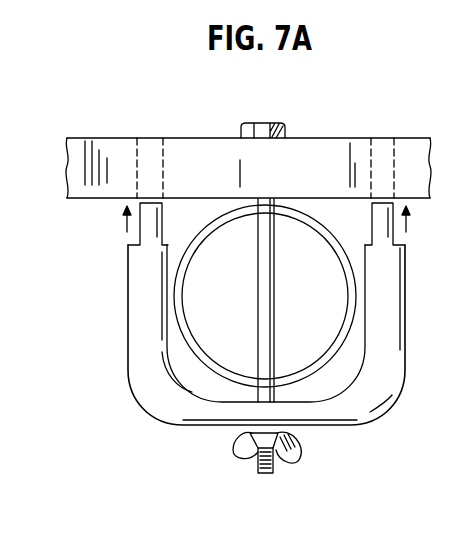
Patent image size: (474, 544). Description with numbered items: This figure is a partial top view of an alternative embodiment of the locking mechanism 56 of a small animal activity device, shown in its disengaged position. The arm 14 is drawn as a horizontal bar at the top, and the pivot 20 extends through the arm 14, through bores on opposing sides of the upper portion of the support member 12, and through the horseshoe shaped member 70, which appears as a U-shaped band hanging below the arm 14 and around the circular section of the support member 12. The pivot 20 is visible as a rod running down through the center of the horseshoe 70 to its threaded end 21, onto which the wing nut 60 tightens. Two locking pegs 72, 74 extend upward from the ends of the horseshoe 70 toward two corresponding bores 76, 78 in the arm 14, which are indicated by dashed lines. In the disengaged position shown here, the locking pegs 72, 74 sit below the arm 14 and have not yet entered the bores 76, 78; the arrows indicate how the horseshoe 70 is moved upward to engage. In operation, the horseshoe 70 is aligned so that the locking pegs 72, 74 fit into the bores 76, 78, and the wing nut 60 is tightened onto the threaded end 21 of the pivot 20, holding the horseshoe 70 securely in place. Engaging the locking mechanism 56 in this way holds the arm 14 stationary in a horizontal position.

The support member 12 is at (331, 233).
The arm 14 is at (415, 138).
The pivot 20 is at (269, 123).
The threaded end 21 is at (262, 477).
The locking mechanism 56 is at (253, 328).
The wing nut 60 is at (299, 445).
The horseshoe shaped member 70 is at (390, 342).
The locking peg 72 is at (392, 235).
The locking peg 74 is at (138, 233).
The bore 76 is at (380, 138).
The bore 78 is at (152, 138).